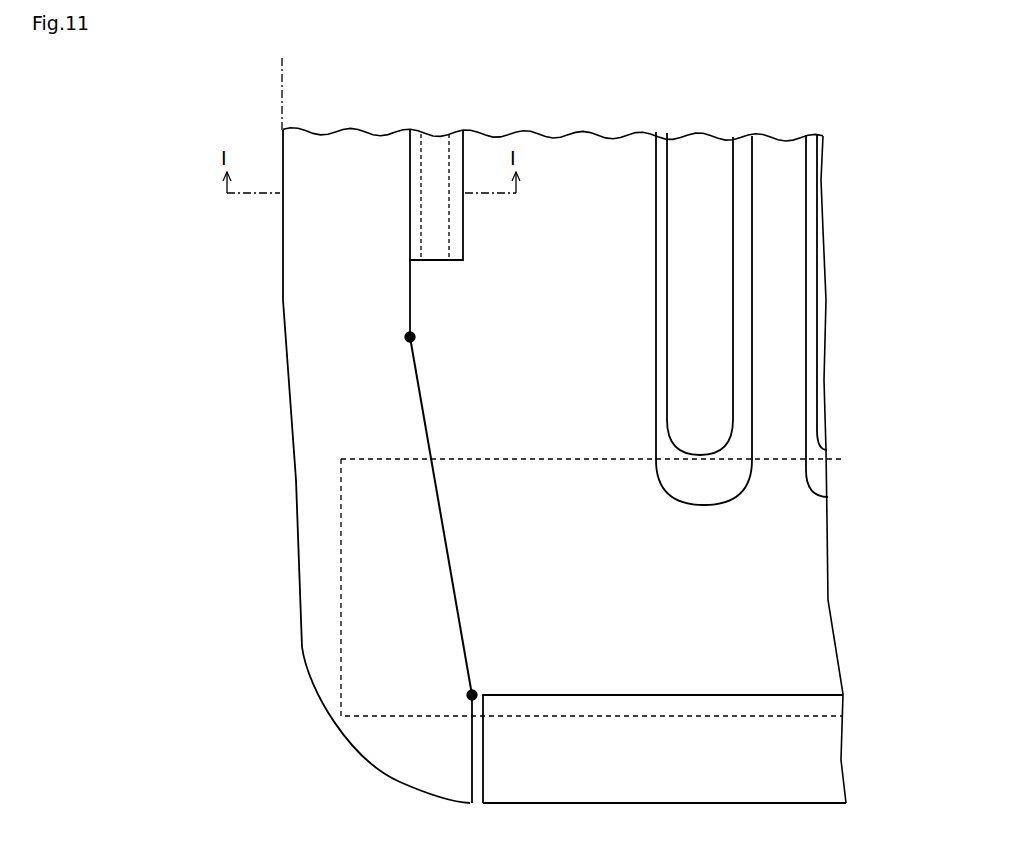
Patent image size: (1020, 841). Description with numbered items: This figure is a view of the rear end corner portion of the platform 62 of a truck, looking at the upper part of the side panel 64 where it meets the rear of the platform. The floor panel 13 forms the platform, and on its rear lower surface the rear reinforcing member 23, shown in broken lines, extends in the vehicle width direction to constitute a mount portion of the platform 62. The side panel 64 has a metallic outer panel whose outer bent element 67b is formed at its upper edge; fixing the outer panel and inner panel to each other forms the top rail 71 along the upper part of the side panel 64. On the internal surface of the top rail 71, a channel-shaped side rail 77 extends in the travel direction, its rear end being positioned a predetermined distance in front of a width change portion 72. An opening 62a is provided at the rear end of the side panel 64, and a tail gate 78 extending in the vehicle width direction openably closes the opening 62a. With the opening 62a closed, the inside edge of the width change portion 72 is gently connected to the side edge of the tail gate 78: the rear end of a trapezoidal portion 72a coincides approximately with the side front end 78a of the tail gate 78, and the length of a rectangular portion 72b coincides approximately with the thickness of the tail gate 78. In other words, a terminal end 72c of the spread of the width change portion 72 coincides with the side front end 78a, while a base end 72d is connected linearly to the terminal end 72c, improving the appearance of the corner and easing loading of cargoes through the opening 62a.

The floor panel 13 is at (617, 152).
The platform 62 is at (283, 237).
The outer bent element 67b is at (327, 292).
The side panel 64 is at (294, 487).
The top rail 71 is at (320, 545).
The opening 62a is at (473, 772).
The side rail 77 is at (463, 228).
The base end 72d is at (416, 337).
The width change portion 72 is at (591, 316).
The trapezoidal portion 72a is at (424, 410).
The rectangular portion 72b is at (473, 733).
The terminal end 72c is at (475, 690).
The side front end 78a is at (484, 700).
The tail gate 78 is at (708, 803).
The rear reinforcing member 23 is at (388, 717).